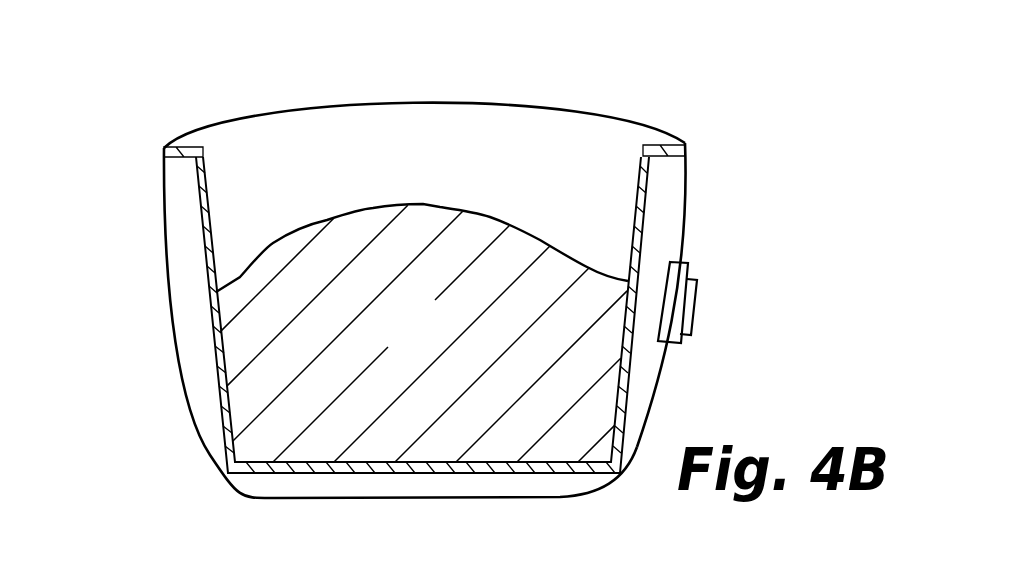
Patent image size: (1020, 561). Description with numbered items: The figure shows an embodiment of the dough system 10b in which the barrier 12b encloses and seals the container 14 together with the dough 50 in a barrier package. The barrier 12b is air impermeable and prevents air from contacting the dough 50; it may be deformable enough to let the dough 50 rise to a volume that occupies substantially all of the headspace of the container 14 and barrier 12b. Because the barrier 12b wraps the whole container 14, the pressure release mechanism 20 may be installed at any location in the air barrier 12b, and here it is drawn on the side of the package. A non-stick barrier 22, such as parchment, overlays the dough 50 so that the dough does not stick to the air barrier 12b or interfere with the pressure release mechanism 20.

The dough system 10b is at (712, 220).
The barrier 12b is at (158, 210).
The container 14 is at (202, 300).
The pressure release mechanism 20 is at (703, 298).
The non-stick barrier 22 is at (376, 200).
The dough 50 is at (434, 346).